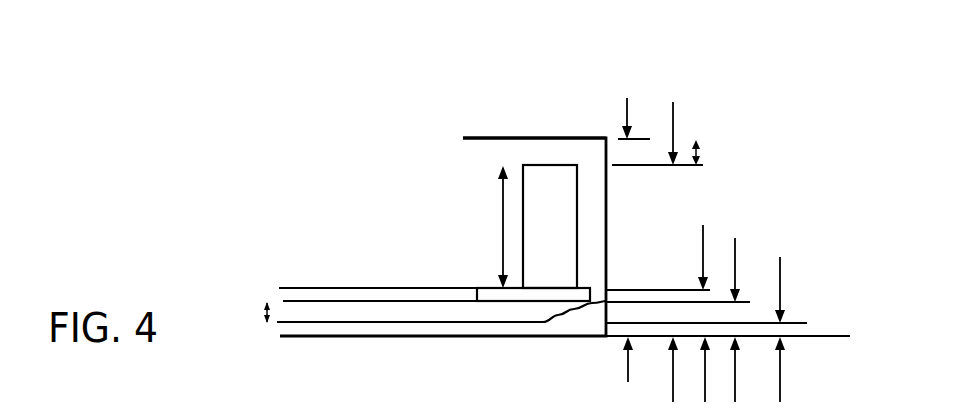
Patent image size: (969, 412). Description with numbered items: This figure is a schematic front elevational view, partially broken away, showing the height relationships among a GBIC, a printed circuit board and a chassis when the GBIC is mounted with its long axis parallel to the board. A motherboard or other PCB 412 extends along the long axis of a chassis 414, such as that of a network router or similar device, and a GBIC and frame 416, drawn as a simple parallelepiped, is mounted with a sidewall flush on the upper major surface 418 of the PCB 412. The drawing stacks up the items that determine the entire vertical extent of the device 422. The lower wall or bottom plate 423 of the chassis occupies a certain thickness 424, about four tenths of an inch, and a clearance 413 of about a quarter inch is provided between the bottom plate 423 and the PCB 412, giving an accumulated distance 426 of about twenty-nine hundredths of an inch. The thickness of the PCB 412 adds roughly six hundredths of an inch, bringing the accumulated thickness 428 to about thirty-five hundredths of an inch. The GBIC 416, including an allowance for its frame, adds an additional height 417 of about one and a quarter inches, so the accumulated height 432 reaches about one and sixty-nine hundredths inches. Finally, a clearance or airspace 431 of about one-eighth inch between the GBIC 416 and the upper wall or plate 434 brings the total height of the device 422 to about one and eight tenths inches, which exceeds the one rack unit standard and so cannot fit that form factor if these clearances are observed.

The PCB 412 is at (316, 300).
The clearance 413 is at (263, 312).
The chassis 414 is at (506, 117).
The GBIC and frame 416 is at (550, 226).
The additional height 417 is at (502, 207).
The upper major surface 418 is at (388, 287).
The vertical extent of the device 422 is at (627, 98).
The bottom plate 423 is at (403, 337).
The thickness 424 is at (781, 366).
The accumulated distance 426 is at (735, 256).
The accumulated thickness 428 is at (703, 236).
The clearance or airspace 431 is at (700, 150).
The accumulated height 432 is at (673, 128).
The upper wall or plate 434 is at (483, 137).